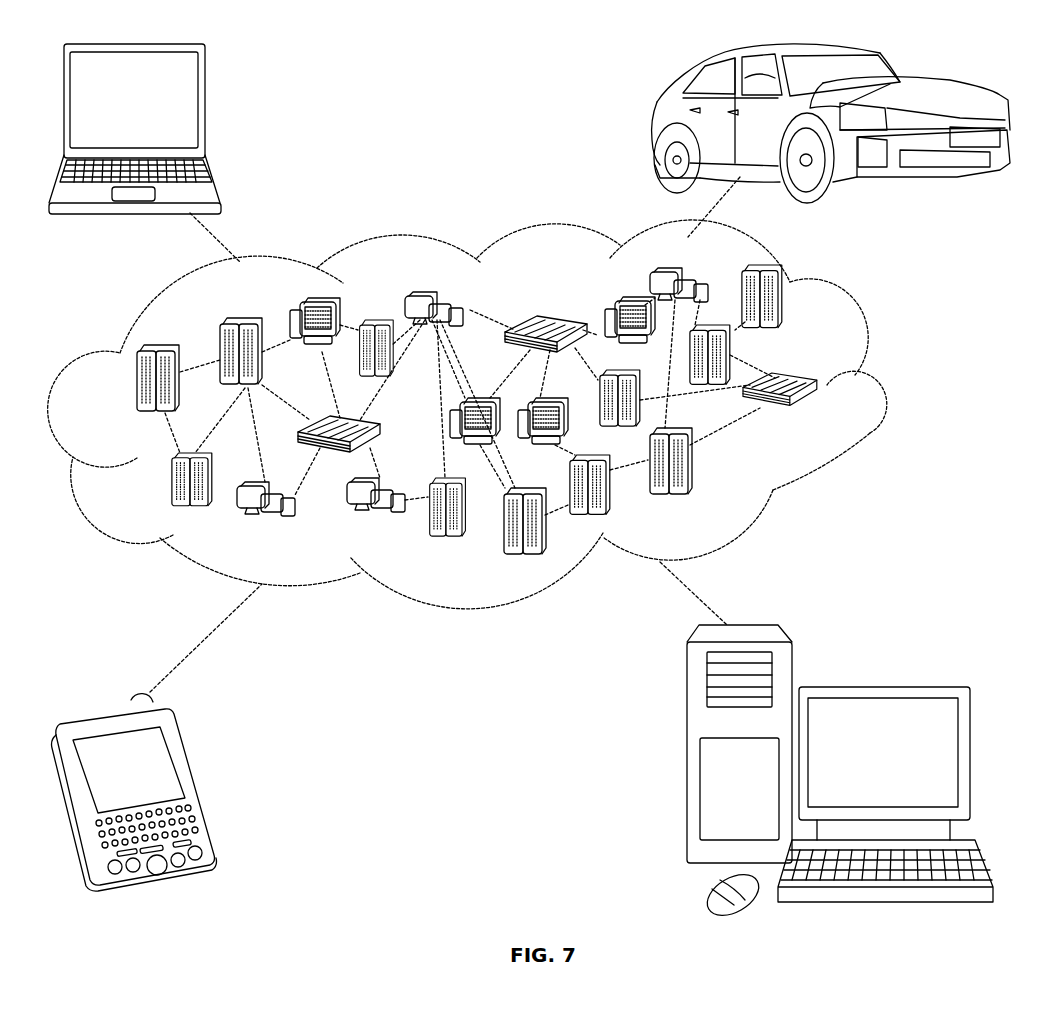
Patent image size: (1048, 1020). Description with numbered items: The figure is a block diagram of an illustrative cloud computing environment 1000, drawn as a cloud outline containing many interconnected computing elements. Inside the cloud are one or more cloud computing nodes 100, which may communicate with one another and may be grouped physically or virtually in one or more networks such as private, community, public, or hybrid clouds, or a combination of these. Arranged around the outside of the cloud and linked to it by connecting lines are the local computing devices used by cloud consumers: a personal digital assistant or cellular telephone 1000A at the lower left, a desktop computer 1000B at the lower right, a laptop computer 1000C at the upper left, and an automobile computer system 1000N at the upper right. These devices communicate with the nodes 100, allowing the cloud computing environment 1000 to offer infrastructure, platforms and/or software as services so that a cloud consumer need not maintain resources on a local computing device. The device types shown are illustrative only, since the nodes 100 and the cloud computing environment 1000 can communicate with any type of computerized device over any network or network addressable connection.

The laptop computer 1000C is at (207, 109).
The automobile computer system 1000N is at (655, 125).
The cloud computing environment 1000 is at (887, 391).
The cloud computing nodes 100 is at (820, 420).
The personal digital assistant (PDA) or cellular telephone 1000A is at (199, 782).
The desktop computer 1000B is at (880, 688).